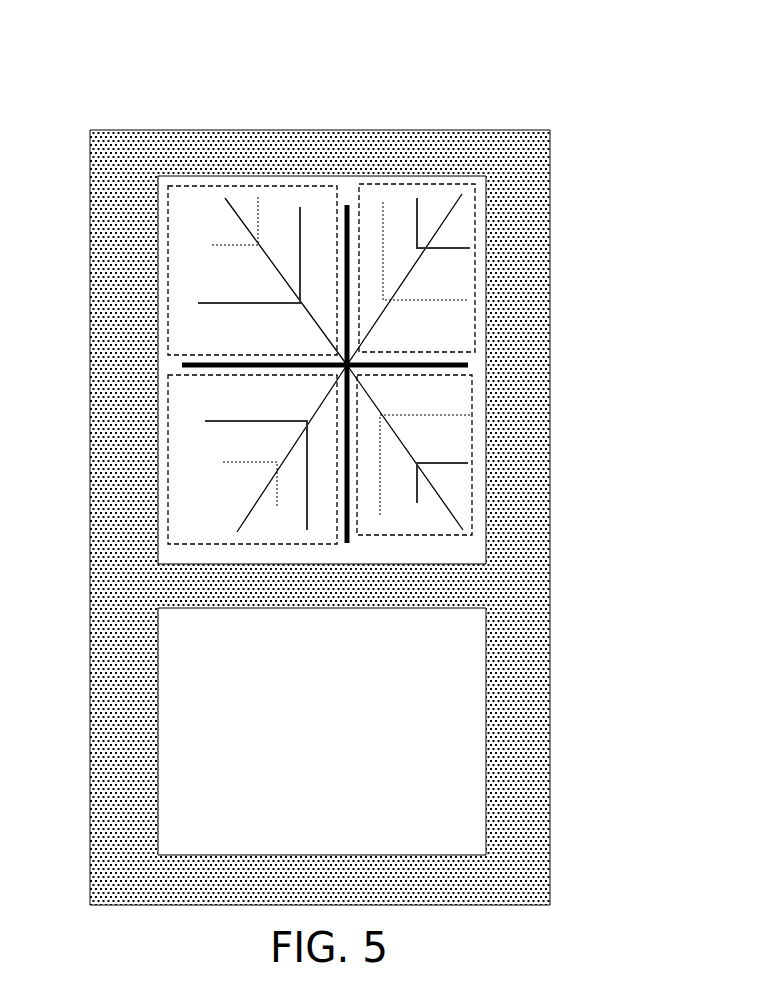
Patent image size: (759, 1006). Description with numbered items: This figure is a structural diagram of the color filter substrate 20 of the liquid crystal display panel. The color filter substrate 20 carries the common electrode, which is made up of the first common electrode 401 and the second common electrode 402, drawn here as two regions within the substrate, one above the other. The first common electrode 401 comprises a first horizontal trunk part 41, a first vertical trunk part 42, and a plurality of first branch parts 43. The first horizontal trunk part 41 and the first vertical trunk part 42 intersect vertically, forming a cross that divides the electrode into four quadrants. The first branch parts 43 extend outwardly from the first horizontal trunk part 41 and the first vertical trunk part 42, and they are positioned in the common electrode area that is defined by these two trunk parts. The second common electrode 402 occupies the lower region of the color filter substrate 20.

The color filter substrate 20 is at (242, 108).
The first horizontal trunk part 41 is at (463, 363).
The first vertical trunk part 42 is at (347, 542).
The first branch parts 43 is at (263, 187).
The first common electrode 401 is at (488, 373).
The second common electrode 402 is at (487, 730).